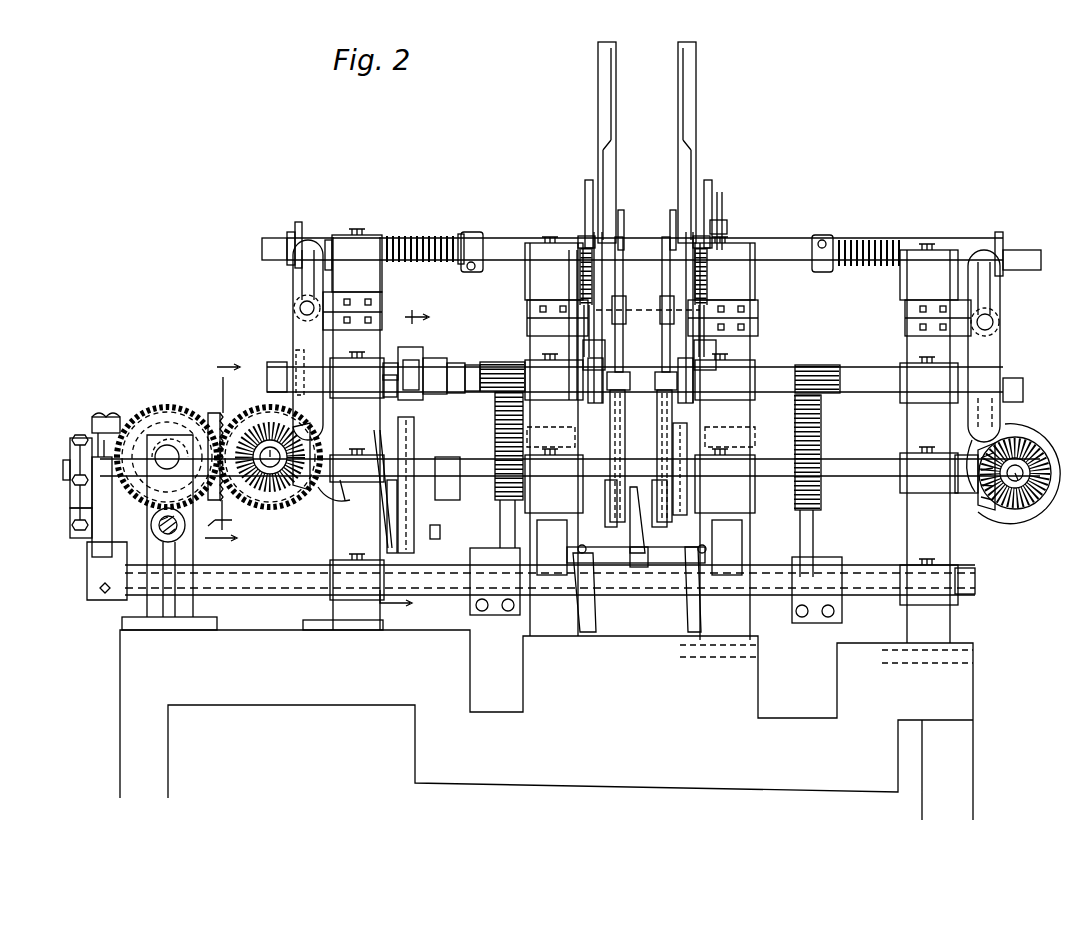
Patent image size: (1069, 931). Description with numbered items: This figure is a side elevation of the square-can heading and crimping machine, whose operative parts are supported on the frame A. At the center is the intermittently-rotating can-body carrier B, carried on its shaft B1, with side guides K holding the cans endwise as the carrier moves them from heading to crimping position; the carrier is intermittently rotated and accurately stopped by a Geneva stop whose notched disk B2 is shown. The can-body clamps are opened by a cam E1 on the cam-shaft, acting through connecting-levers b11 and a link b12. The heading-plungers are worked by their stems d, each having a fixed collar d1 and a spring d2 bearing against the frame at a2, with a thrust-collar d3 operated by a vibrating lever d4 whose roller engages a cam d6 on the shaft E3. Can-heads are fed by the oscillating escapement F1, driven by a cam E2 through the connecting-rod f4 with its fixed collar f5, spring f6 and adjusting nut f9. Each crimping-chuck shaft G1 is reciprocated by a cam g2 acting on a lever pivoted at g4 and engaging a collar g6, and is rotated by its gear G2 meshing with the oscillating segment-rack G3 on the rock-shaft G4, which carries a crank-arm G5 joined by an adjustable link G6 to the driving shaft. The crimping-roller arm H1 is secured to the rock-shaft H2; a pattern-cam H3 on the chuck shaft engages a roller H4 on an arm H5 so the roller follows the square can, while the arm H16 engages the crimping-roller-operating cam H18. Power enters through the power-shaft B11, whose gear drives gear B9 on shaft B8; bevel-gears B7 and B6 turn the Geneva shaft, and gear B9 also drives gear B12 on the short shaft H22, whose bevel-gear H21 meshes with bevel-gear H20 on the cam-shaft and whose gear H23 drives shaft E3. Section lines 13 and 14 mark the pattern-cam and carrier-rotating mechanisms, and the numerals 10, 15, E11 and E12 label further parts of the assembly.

The frame A is at (546, 524).
The plunger stem d is at (512, 256).
The collar d1 is at (472, 234).
The spring d2 is at (428, 240).
The thrust-collar d3 is at (299, 226).
The vibrating lever d4 is at (293, 275).
The cam d6 is at (1008, 528).
The stationary frame abutment a2 is at (388, 242).
The cam g2 is at (1038, 415).
The lever pivot g4 is at (300, 310).
The collar g6 is at (1024, 382).
The crimping-chuck shaft G1 is at (868, 378).
The gear G2 is at (500, 362).
The oscillating segment-rack G3 is at (496, 430).
The rock-shaft G4 is at (424, 572).
The crank-arm G5 is at (92, 550).
The adjustable link G6 is at (72, 512).
The cam E1 is at (875, 472).
The cam E2 is at (616, 427).
The shaft E3 is at (1024, 508).
The upper rods E11 is at (672, 218).
The slide bar E12 is at (690, 437).
The can-head feed-escapement F1 is at (678, 66).
The connecting-rod f4 is at (585, 196).
The fixed collar f5 is at (584, 352).
The spring f6 is at (700, 278).
The nut f9 is at (722, 222).
The can-body carrier B is at (662, 252).
The carrier shaft B1 is at (640, 360).
The notched disk B2 is at (325, 347).
The bevel-gear B6 is at (210, 418).
The bevel-gear B7 is at (170, 412).
The shaft B8 is at (167, 457).
The gear B9 is at (142, 408).
The power-shaft B11 is at (180, 540).
The gear B12 is at (204, 525).
The connecting-levers b11 is at (588, 635).
The link b12 is at (700, 600).
The oscillating arm H1 is at (437, 404).
The rock-shaft H2 is at (421, 311).
The pattern-cam H3 is at (436, 358).
The roller H4 is at (405, 355).
The arm H5 is at (383, 412).
The arm H16 is at (392, 512).
The crimping-roller-operating cam H18 is at (398, 432).
The bevel-gear H20 is at (378, 490).
The bevel-gear H21 is at (248, 490).
The short shaft H22 is at (255, 430).
The gear H23 is at (988, 512).
The side guides K is at (686, 311).
The section line 10 is at (214, 510).
The section line 13 is at (404, 466).
The section line 14 is at (222, 454).
The section line 15 is at (440, 520).